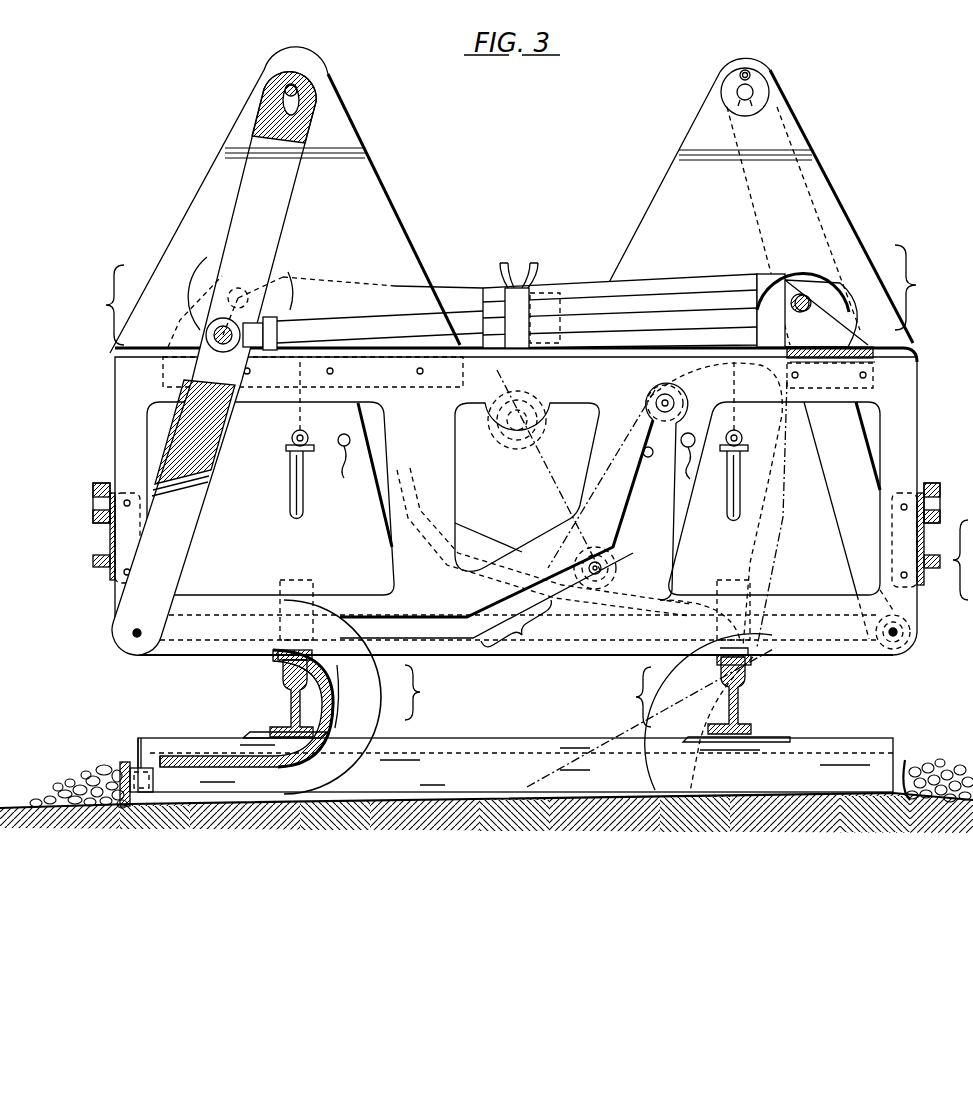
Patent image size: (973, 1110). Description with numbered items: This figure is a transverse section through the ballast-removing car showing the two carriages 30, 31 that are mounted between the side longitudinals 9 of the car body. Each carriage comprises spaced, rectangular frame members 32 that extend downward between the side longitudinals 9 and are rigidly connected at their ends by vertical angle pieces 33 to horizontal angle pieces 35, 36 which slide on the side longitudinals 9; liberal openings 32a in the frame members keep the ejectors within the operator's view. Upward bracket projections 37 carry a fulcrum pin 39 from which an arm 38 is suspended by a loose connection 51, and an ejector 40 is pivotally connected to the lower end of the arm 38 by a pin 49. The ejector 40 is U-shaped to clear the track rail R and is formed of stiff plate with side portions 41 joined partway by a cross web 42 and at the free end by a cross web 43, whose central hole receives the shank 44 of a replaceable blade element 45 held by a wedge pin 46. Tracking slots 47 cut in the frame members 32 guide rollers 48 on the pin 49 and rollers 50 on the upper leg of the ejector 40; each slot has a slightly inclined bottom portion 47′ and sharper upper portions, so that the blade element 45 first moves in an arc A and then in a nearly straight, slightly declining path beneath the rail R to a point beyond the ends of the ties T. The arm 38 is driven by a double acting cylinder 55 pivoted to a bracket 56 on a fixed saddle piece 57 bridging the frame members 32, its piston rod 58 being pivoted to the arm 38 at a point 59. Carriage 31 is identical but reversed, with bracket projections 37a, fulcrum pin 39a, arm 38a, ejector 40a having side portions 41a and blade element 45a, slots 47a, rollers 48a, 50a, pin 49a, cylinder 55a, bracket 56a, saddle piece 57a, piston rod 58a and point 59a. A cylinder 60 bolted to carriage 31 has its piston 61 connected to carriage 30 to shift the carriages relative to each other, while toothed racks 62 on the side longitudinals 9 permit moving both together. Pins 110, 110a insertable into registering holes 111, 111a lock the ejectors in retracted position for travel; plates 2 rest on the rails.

The plate 2 is at (280, 657).
The side longitudinals 9 is at (110, 538).
The carriage 30 is at (92, 305).
The carriage 31 is at (924, 287).
The frame members 32 is at (912, 402).
The frame opening 32a is at (365, 545).
The vertical angle pieces 33 is at (126, 493).
The horizontal angle piece 35 is at (93, 501).
The horizontal angle piece 36 is at (93, 561).
The upward bracket projections 37 is at (213, 183).
The upward bracket projections 37a is at (825, 190).
The arm 38 is at (178, 540).
The arm 38a is at (860, 535).
The fulcrum pin 39 is at (300, 84).
The fulcrum pin 39a is at (752, 90).
The ballast displacing element or ejector 40 is at (366, 697).
The ballast displacing element 40a is at (679, 713).
The side portions 41 is at (340, 771).
The side portions 41a is at (672, 661).
The cross web 42 is at (330, 688).
The cross web 43 is at (128, 760).
The shank 44 is at (154, 777).
The blade element 45 is at (112, 764).
The blade element 45a is at (920, 765).
The wedge pin 46 is at (140, 761).
The tracking slots 47 is at (514, 522).
The bottom portion 47′ is at (422, 635).
The tracking slots 47a is at (455, 597).
The rollers 48 is at (180, 627).
The rollers 48a is at (915, 630).
The pin 49 is at (125, 638).
The pin 49a is at (913, 650).
The rollers 50 is at (320, 615).
The rollers 50a is at (734, 513).
The loose connection 51 is at (286, 105).
The double acting pressure fluid cylinder 55 is at (660, 288).
The actuating cylinder 55a is at (458, 287).
The bracket 56 is at (845, 343).
The bracket 56a is at (205, 293).
The saddle piece 57 is at (865, 346).
The saddle piece 57a is at (170, 316).
The piston rod 58 is at (367, 322).
The piston rod 58a is at (575, 312).
The point 59 is at (222, 344).
The point 59a is at (810, 256).
The double acting pressure fluid cylinder 60 is at (523, 398).
The piston 61 is at (498, 455).
The toothed racks 62 is at (100, 480).
The pin 110 is at (735, 519).
The pin 110a is at (291, 487).
The holes 111 is at (690, 462).
The holes 111a is at (345, 476).
The arc A is at (602, 769).
The track rail R is at (285, 699).
The ties T is at (488, 750).